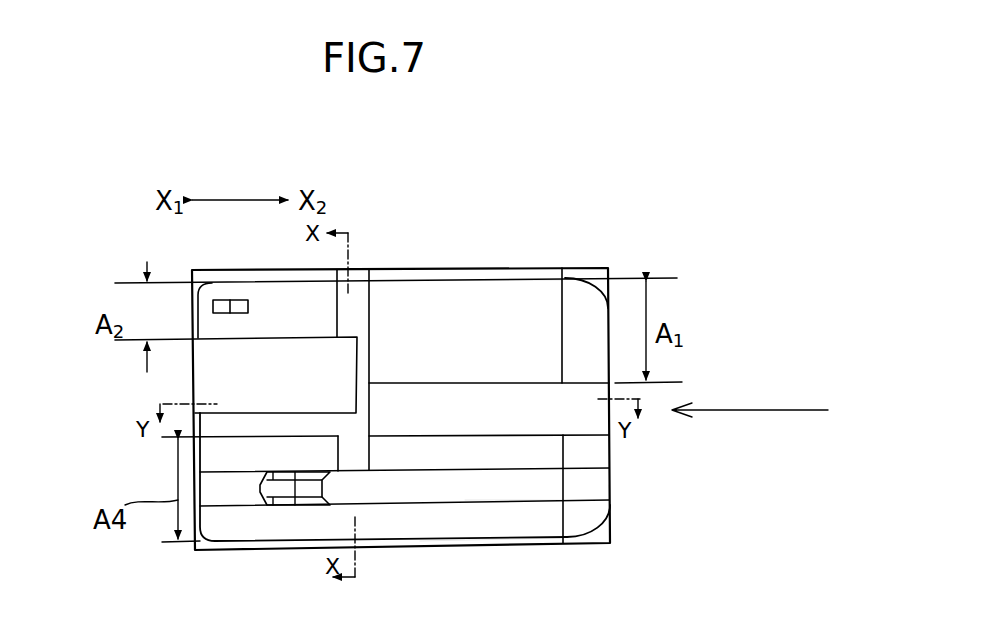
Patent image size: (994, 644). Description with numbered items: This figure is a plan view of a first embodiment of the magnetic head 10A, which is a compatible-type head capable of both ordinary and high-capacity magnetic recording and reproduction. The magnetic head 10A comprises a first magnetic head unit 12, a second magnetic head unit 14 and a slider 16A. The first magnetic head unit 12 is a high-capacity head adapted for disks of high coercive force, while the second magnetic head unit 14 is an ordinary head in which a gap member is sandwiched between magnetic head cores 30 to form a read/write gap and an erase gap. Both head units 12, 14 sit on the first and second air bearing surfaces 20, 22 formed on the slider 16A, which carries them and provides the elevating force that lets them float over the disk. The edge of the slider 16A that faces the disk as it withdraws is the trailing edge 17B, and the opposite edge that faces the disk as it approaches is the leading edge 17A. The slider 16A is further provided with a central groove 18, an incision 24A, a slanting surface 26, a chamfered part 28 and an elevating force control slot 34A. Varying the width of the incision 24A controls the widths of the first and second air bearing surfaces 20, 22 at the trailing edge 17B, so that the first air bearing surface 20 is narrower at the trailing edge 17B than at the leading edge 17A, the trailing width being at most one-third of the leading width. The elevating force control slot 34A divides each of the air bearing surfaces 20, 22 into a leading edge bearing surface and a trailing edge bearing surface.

The magnetic head 10A is at (567, 178).
The first magnetic head unit 12 is at (226, 296).
The second magnetic head unit 14 is at (304, 514).
The slider 16A is at (515, 265).
The leading edge 17A is at (610, 306).
The trailing edge 17B is at (193, 314).
The central groove 18 is at (420, 392).
The first air bearing surface 20 is at (418, 291).
The second air bearing surface 22 is at (218, 527).
The incision 24A is at (220, 367).
The slanting surface 26 is at (570, 287).
The chamfered part 28 is at (274, 270).
The magnetic head core 30 is at (537, 480).
The elevating force control slot 34A is at (350, 444).